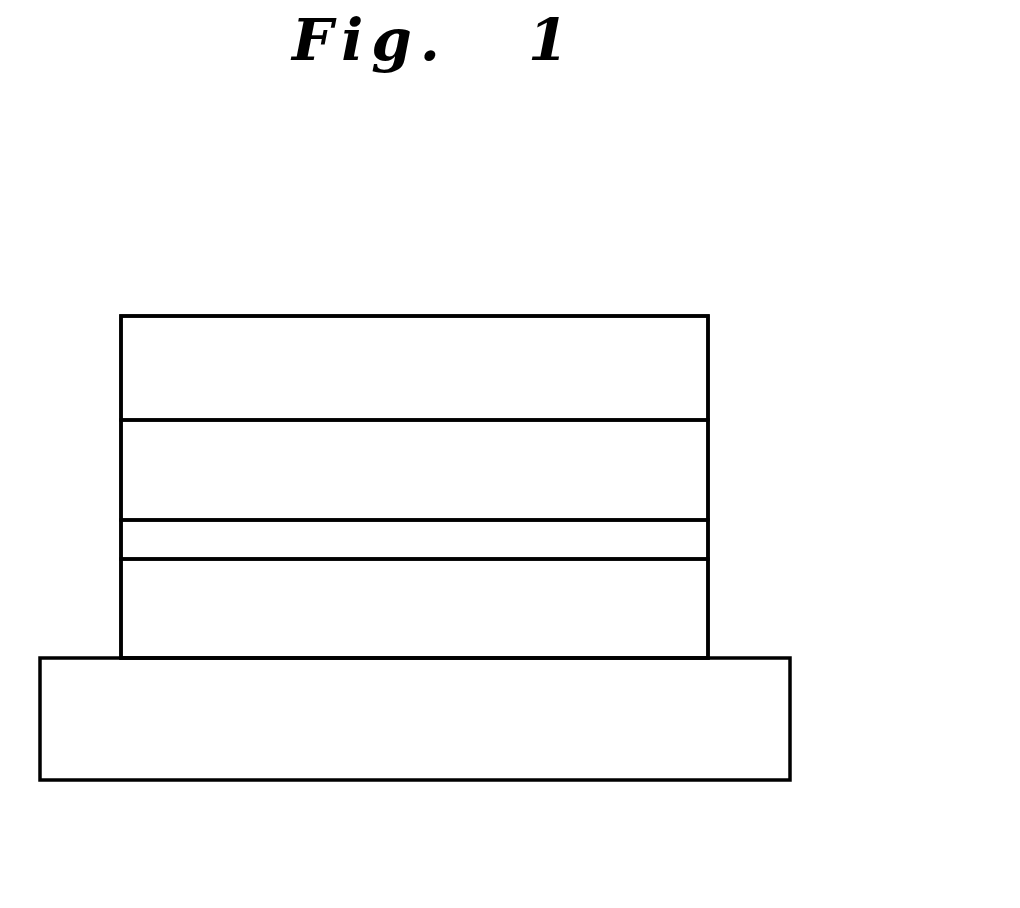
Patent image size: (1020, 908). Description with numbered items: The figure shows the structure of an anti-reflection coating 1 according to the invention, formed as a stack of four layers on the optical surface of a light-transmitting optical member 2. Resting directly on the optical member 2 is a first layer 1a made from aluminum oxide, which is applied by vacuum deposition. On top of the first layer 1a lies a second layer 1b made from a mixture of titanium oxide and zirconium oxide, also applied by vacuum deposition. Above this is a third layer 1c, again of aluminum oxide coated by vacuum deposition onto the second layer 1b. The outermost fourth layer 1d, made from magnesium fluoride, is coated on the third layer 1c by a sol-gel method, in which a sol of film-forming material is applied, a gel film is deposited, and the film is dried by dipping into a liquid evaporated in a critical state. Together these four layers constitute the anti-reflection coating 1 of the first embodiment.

The anti-reflection coating 1 is at (862, 350).
The first layer 1a is at (697, 622).
The second layer 1b is at (696, 550).
The third layer 1c is at (697, 480).
The fourth layer 1d is at (700, 383).
The optical member 2 is at (778, 718).